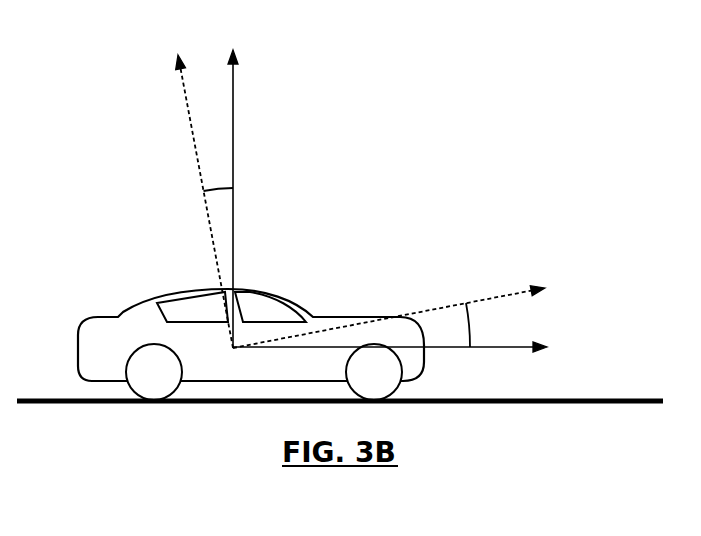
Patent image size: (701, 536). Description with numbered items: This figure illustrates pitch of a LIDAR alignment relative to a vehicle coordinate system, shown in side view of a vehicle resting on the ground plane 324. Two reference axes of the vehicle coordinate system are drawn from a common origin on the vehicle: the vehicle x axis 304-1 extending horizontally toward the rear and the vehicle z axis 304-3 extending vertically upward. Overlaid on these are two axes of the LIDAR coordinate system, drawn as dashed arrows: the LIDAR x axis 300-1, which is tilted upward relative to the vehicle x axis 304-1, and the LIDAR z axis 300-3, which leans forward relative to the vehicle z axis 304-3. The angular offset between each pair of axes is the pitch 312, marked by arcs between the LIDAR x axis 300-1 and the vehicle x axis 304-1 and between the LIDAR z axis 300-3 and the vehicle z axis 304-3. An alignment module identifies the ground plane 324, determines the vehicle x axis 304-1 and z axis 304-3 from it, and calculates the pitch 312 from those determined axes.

The LIDAR x axis 300-1 is at (518, 292).
The LIDAR z axis 300-3 is at (193, 150).
The vehicle x axis 304-1 is at (515, 348).
The vehicle z axis 304-3 is at (235, 102).
The pitch 312 is at (224, 186).
The ground plane 324 is at (600, 397).